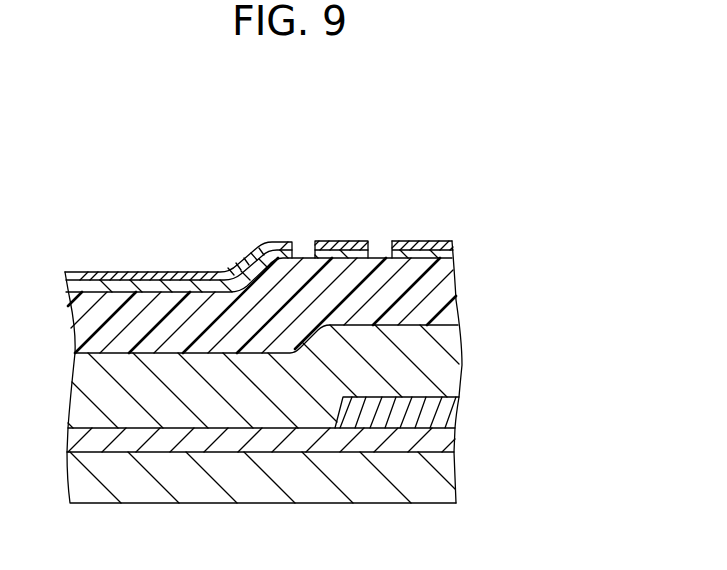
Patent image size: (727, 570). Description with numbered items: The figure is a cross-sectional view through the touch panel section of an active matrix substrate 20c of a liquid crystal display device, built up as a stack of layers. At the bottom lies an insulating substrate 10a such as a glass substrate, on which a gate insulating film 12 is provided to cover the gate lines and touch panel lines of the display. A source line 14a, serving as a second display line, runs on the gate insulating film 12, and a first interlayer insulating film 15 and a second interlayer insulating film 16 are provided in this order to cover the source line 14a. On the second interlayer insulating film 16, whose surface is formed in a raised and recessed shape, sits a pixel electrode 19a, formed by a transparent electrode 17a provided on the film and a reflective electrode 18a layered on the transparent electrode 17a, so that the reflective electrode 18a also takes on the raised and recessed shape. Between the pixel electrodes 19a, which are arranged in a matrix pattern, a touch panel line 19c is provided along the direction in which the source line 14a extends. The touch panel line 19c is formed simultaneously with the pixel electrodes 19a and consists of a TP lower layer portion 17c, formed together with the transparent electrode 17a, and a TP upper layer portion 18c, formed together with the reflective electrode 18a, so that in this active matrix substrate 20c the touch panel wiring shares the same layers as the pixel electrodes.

The insulating substrate 10a is at (435, 481).
The gate insulating film 12 is at (443, 444).
The source line 14a is at (447, 412).
The first interlayer insulating film 15 is at (447, 365).
The second interlayer insulating film 16 is at (453, 298).
The transparent electrode 17a is at (453, 256).
The reflective electrode 18a is at (452, 243).
The pixel electrode 19a is at (562, 185).
The TP lower layer portion 17c is at (317, 256).
The TP upper layer portion 18c is at (347, 243).
The touch panel line 19c is at (388, 173).
The active matrix substrate 20c is at (160, 177).